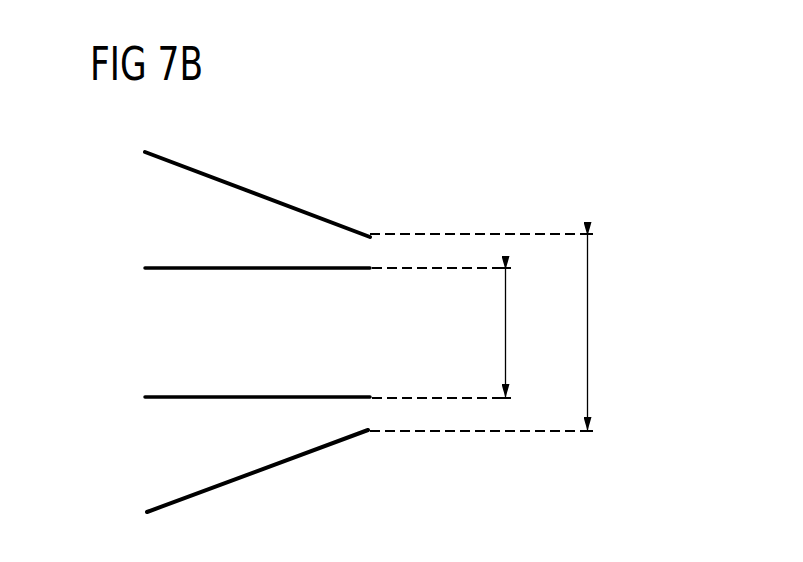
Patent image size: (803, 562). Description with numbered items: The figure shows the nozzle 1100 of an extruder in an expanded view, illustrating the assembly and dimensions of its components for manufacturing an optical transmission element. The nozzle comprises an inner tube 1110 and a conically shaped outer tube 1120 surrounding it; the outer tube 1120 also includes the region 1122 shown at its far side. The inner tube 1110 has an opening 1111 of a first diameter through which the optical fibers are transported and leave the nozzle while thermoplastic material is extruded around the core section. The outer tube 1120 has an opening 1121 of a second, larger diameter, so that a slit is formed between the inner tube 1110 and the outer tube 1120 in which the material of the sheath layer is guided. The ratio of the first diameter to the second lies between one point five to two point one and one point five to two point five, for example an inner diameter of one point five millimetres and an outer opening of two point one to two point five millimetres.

The nozzle 1100 is at (364, 307).
The inner tube 1110 is at (231, 398).
The opening 1111 is at (365, 330).
The outer tube 1120 is at (218, 178).
The opening 1121 is at (368, 253).
The cladding region 1122 is at (203, 220).